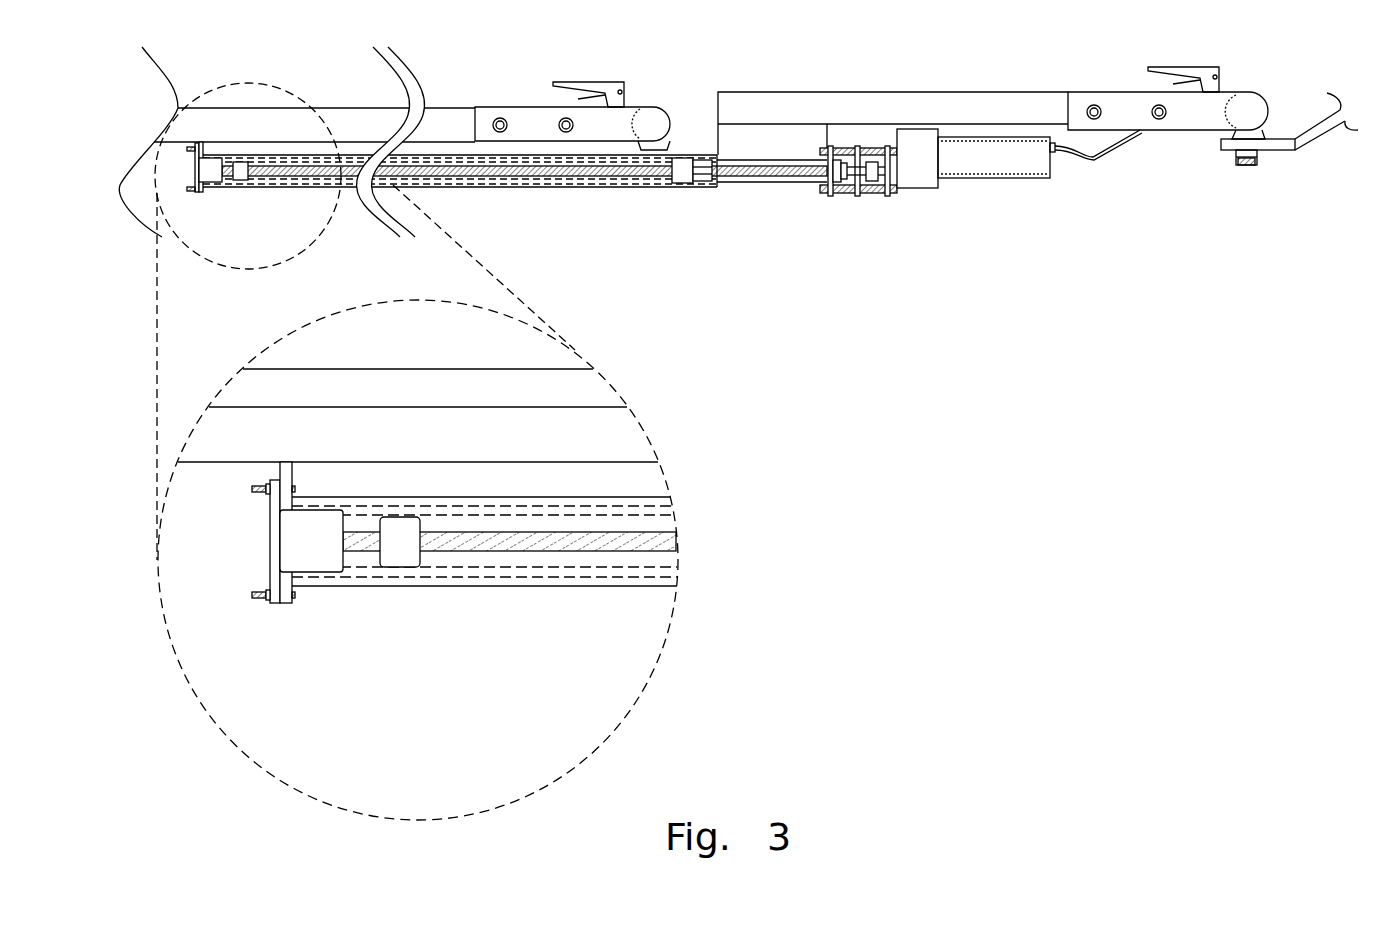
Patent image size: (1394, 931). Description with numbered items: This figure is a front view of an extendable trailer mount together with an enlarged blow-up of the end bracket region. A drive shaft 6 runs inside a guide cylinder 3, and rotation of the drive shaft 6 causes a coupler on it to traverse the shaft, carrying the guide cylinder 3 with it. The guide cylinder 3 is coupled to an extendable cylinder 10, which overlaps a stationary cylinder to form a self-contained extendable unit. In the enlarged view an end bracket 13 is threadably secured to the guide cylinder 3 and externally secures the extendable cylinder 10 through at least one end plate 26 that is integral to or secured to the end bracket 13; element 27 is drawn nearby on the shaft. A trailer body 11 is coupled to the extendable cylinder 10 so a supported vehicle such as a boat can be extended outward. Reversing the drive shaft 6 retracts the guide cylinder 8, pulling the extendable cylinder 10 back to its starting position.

The trailer body 11 is at (507, 430).
The extendable cylinder 10 is at (635, 587).
The guide cylinder 8 is at (662, 566).
The guide cylinder 3 is at (587, 577).
The drive shaft 6 is at (625, 538).
The end plate 26 is at (273, 541).
The end bracket 13 is at (315, 560).
The spindle nut 27 is at (403, 557).